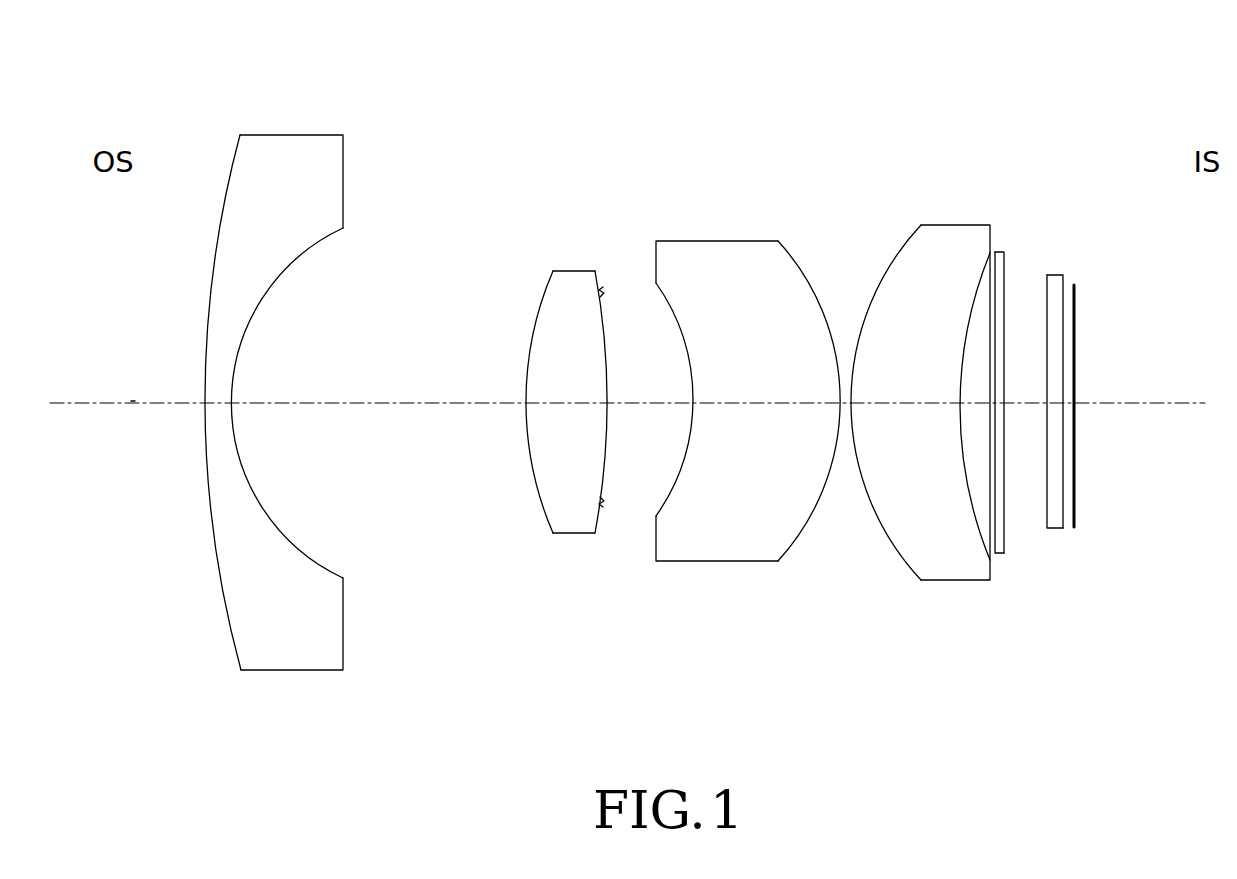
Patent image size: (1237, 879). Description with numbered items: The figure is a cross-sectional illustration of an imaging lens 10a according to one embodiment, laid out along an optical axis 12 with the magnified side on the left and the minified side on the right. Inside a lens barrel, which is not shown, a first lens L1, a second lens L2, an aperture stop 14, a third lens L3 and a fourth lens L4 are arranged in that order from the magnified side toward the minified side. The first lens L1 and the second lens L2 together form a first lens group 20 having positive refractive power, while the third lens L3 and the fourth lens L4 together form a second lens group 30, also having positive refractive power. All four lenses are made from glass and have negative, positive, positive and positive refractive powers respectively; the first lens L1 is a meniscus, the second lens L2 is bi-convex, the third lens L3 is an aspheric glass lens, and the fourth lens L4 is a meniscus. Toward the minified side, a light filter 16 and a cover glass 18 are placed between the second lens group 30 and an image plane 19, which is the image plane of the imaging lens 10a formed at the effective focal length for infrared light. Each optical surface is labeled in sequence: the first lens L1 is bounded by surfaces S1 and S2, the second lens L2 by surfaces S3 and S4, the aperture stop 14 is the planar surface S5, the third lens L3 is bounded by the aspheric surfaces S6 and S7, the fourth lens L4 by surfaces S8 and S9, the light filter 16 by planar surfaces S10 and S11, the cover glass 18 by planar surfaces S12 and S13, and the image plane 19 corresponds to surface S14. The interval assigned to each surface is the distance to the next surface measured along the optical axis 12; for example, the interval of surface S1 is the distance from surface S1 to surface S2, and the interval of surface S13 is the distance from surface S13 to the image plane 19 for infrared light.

The imaging lens 10a is at (142, 55).
The optical axis 12 is at (133, 402).
The aperture stop 14 is at (603, 287).
The light filter 16 is at (1000, 250).
The cover glass 18 is at (1053, 285).
The image plane 19 is at (1075, 320).
The first lens group 20 is at (243, 80).
The second lens group 30 is at (643, 80).
The first lens L1 is at (303, 150).
The second lens L2 is at (569, 290).
The third lens L3 is at (720, 253).
The fourth lens L4 is at (953, 243).
The surface S1 is at (222, 598).
The surface S2 is at (293, 543).
The surface S3 is at (542, 508).
The surface S4 is at (598, 492).
The surface S5 is at (603, 507).
The surface S6 is at (682, 465).
The surface S7 is at (818, 512).
The surface S8 is at (887, 537).
The surface S9 is at (978, 523).
The surface S10 is at (1007, 530).
The surface S11 is at (1005, 530).
The surface S12 is at (1050, 503).
The surface S13 is at (1063, 503).
The surface S14 is at (1077, 497).